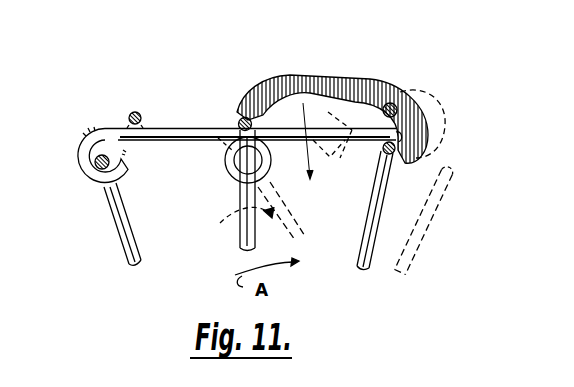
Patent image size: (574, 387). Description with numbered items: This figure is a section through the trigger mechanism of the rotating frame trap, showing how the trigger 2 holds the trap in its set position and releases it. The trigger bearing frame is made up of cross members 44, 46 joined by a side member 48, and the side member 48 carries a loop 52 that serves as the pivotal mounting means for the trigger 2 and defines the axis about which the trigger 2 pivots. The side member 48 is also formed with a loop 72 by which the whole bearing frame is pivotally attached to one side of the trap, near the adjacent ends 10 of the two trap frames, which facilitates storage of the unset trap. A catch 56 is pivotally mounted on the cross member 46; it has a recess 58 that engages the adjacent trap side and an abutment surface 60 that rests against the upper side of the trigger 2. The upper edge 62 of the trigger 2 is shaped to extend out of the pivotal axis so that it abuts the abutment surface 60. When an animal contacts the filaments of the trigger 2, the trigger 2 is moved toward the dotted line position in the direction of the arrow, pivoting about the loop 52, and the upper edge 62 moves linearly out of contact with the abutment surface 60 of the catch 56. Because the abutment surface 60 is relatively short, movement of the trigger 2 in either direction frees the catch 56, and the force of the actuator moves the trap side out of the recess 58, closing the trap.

The trigger 2 is at (244, 200).
The adjacent ends 10 is at (112, 222).
The cross member 44 is at (130, 113).
The cross member 46 is at (389, 102).
The side member 48 is at (176, 128).
The loop 52 is at (268, 174).
The catch 56 is at (301, 78).
The recess 58 is at (402, 132).
The abutment surface 60 is at (238, 120).
The upper edge 62 is at (233, 138).
The loop 72 is at (80, 146).